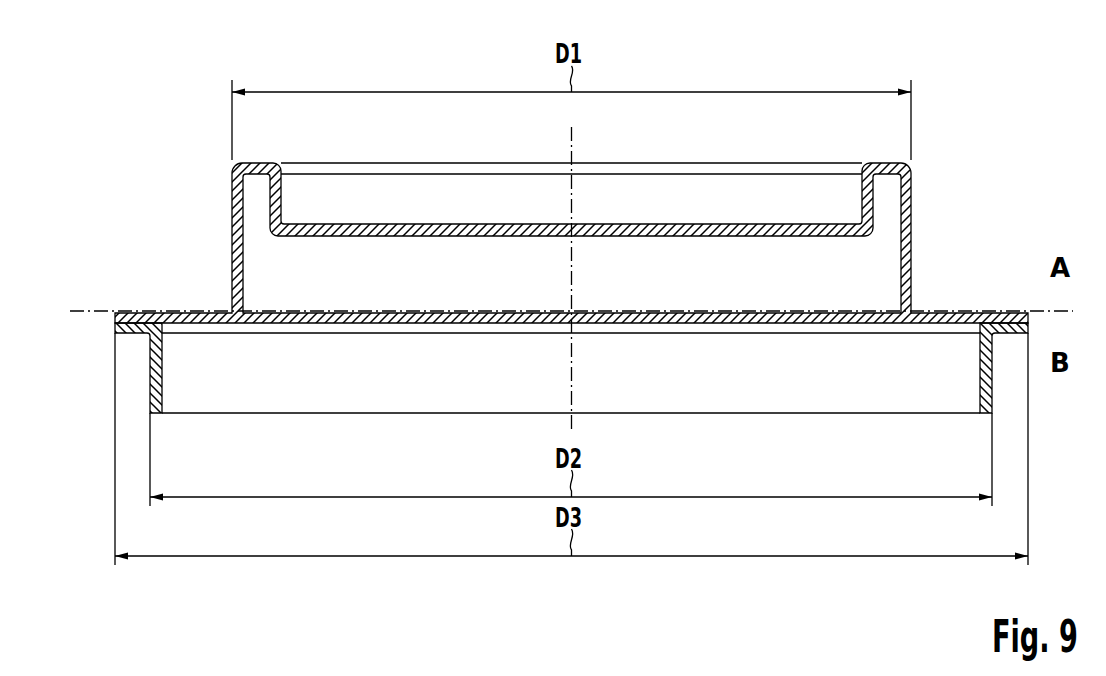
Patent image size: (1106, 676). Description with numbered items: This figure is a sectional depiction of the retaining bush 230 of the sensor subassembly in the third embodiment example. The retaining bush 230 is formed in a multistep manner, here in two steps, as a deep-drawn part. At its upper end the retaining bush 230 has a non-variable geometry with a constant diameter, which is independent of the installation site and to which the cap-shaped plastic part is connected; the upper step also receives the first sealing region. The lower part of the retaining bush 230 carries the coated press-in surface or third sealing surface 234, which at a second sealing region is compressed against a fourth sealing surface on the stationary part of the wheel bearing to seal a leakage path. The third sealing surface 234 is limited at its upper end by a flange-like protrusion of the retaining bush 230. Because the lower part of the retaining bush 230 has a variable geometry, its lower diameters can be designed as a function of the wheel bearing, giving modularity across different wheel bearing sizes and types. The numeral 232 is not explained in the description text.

The retaining bush 230 is at (913, 225).
The recess 232 is at (290, 186).
The third sealing surface 234 is at (140, 379).